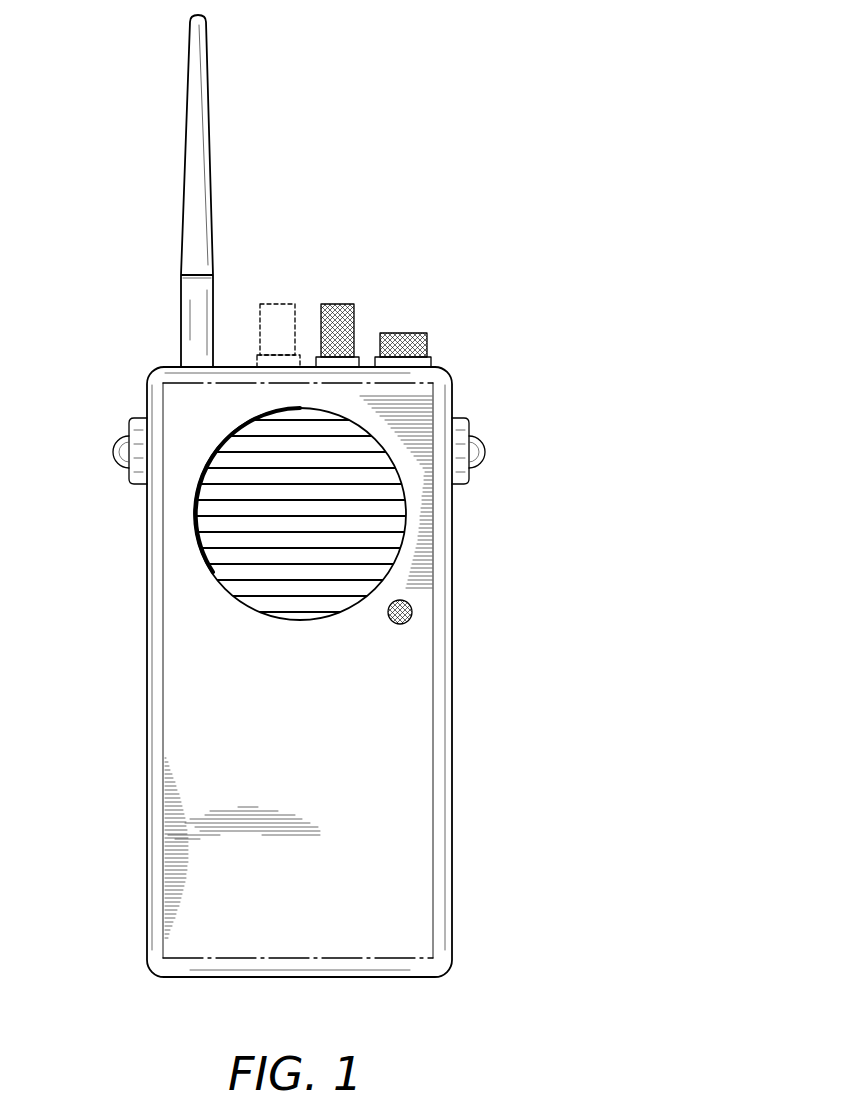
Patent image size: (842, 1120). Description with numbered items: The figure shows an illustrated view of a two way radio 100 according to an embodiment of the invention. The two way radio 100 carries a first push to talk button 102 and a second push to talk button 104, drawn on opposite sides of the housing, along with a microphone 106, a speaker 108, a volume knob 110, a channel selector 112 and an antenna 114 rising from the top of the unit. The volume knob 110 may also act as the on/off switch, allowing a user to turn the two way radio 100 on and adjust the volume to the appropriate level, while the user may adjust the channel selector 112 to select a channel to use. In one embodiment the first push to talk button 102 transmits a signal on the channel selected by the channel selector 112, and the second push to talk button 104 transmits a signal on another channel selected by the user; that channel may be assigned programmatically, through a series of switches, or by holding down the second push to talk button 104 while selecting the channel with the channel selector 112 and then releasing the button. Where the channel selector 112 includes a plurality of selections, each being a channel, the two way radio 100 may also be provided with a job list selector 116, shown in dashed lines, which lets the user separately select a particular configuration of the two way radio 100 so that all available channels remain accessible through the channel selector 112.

The two way radio 100 is at (582, 250).
The first push to talk button 102 is at (118, 462).
The second push to talk button 104 is at (482, 452).
The microphone 106 is at (412, 612).
The speaker 108 is at (300, 612).
The volume knob 110 is at (403, 333).
The channel selector 112 is at (337, 304).
The antenna 114 is at (195, 217).
The job list selector 116 is at (281, 304).